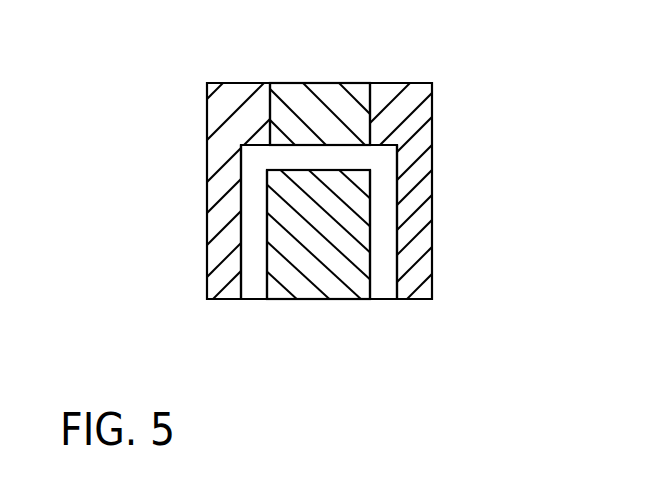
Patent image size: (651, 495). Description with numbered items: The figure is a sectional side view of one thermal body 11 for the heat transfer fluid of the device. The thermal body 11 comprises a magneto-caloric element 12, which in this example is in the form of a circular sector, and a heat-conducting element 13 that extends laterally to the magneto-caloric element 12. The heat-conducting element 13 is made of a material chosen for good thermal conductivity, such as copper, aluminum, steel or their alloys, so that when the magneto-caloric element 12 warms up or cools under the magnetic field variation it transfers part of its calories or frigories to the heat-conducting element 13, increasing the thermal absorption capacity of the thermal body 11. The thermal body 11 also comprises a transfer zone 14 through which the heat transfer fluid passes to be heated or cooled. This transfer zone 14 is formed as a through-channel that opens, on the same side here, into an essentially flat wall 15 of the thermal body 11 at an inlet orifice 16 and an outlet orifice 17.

The thermal body 11 is at (293, 316).
The magneto-caloric element 12 is at (290, 97).
The heat-conducting element 13 is at (207, 205).
The transfer zone 14 is at (382, 212).
The flat wall 15 is at (400, 301).
The inlet orifice 16 is at (245, 301).
The outlet orifice 17 is at (383, 303).